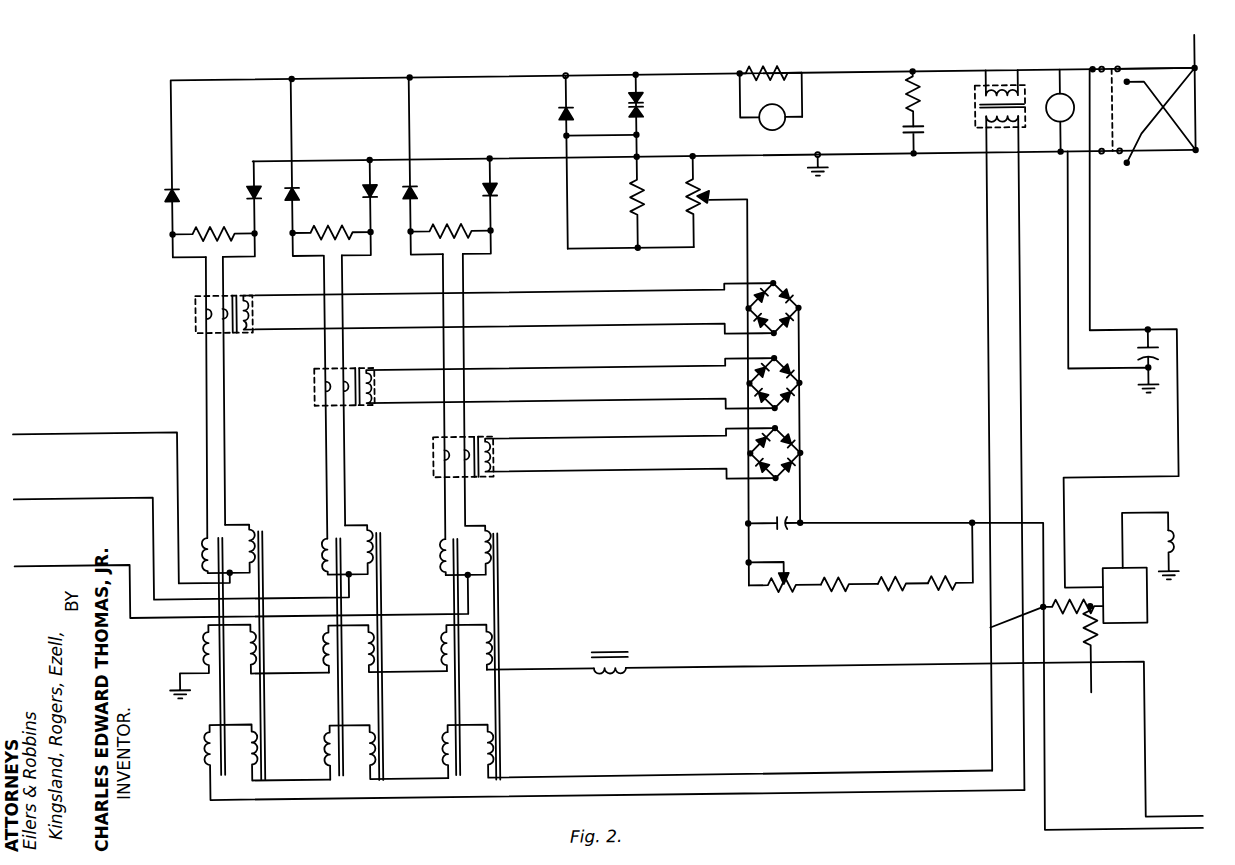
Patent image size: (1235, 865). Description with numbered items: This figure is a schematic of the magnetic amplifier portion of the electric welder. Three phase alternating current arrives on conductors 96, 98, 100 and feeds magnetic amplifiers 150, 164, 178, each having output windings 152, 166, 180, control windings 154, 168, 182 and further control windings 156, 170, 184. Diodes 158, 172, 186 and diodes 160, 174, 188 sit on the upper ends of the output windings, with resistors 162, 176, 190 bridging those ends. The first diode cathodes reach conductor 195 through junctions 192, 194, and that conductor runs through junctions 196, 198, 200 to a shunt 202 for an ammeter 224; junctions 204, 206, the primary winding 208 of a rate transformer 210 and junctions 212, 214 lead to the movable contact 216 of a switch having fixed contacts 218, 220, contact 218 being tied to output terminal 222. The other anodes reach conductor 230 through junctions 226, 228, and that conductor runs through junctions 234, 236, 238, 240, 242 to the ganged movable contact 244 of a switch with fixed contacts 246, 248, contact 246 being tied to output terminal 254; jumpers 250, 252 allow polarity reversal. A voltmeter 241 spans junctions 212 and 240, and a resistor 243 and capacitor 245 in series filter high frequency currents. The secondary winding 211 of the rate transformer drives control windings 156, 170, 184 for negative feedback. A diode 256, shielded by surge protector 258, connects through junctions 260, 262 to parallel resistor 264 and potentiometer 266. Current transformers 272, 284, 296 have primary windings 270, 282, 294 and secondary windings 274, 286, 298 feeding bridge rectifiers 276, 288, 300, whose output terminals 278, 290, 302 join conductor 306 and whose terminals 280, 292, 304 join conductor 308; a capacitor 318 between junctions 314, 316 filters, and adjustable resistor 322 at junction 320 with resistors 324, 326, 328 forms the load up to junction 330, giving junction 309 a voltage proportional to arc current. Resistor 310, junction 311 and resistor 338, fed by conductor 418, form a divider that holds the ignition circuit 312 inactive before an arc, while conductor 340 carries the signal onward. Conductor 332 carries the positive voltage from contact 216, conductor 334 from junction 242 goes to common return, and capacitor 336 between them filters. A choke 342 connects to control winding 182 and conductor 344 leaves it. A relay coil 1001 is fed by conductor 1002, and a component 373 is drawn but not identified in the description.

The conductor 96 is at (72, 428).
The conductor 98 is at (72, 496).
The conductor 100 is at (78, 552).
The magnetic amplifier 150 is at (215, 710).
The output windings 152 is at (230, 529).
The control windings 154 is at (200, 640).
The control windings 156 is at (200, 760).
The diode 158 is at (168, 196).
The diode 160 is at (248, 188).
The resistor 162 is at (240, 220).
The magnetic amplifier 164 is at (335, 694).
The output windings 166 is at (359, 526).
The control windings 168 is at (370, 640).
The control windings 170 is at (370, 745).
The diode 172 is at (298, 194).
The diode 174 is at (366, 192).
The resistor 176 is at (320, 230).
The magnetic amplifier 178 is at (454, 694).
The output windings 180 is at (468, 526).
The control windings 182 is at (490, 640).
The control windings 184 is at (490, 745).
The diode 186 is at (417, 194).
The diode 188 is at (495, 193).
The resistor 190 is at (434, 229).
The junction 192 is at (296, 75).
The junction 194 is at (414, 75).
The conductor 195 is at (480, 75).
The junction 196 is at (570, 75).
The junction 198 is at (640, 75).
The junction 200 is at (744, 75).
The shunt 202 is at (772, 74).
The junction 204 is at (811, 76).
The junction 206 is at (917, 75).
The primary winding 208 is at (986, 82).
The rate transformer 210 is at (984, 105).
The secondary winding 211 is at (990, 124).
The junction 212 is at (1062, 75).
The junction 214 is at (1096, 75).
The movable contact 216 is at (1100, 72).
The fixed contact 218 is at (1135, 75).
The fixed contact 220 is at (1117, 96).
The output terminal 222 is at (1199, 42).
The meter 224 is at (790, 125).
The junction 226 is at (386, 150).
The junction 228 is at (488, 153).
The conductor 230 is at (540, 146).
The junction 234 is at (641, 156).
The junction 236 is at (696, 156).
The junction 238 is at (915, 160).
The junction 240 is at (1060, 155).
The volt meter 241 is at (1058, 99).
The junction 242 is at (1070, 164).
The resistor 243 is at (910, 98).
The movable contact 244 is at (1106, 162).
The capacitor 245 is at (906, 132).
The fixed contact 246 is at (1134, 154).
The fixed contact 248 is at (1130, 172).
The jumper 250 is at (1142, 92).
The jumper 252 is at (1168, 130).
The output terminal 254 is at (1198, 160).
The diode 256 is at (560, 114).
The surge protector 258 is at (648, 102).
The junction 260 is at (572, 134).
The junction 262 is at (646, 236).
The resistor 264 is at (632, 197).
The potentiometer 266 is at (700, 182).
The primary windings 270 is at (208, 318).
The current transformer 272 is at (239, 296).
The secondary windings 274 is at (248, 332).
The full wave bridge rectifier 276 is at (778, 290).
The output terminal 278 is at (748, 310).
The output terminal 280 is at (801, 309).
The primary windings 282 is at (326, 392).
The current transformer 284 is at (360, 365).
The secondary winding 286 is at (373, 402).
The full wave bridge rectifier 288 is at (792, 380).
The output terminal 290 is at (748, 384).
The output terminal 292 is at (801, 386).
The primary windings 294 is at (444, 462).
The current transformer 296 is at (483, 439).
The secondary winding 298 is at (489, 472).
The full wave bridge rectifier 300 is at (790, 448).
The output terminal 302 is at (748, 455).
The output terminal 304 is at (801, 456).
The conductor 306 is at (750, 238).
The conductor 308 is at (801, 495).
The junction 309 is at (990, 631).
The resistor 310 is at (1086, 616).
The junction 311 is at (1088, 640).
The ignition circuit 312 is at (1136, 600).
The junction 314 is at (746, 525).
The junction 316 is at (794, 528).
The capacitor 318 is at (787, 513).
The junction 320 is at (746, 564).
The adjustable resistor 322 is at (788, 592).
The resistor 324 is at (846, 592).
The resistor 326 is at (900, 582).
The resistor 328 is at (934, 591).
The junction 330 is at (970, 524).
The conductor 332 is at (1093, 266).
The conductor 334 is at (1135, 374).
The capacitor 336 is at (1137, 350).
The resistor 338 is at (1092, 638).
The conductor 340 is at (1096, 832).
The choke 342 is at (613, 672).
The conductor 344 is at (764, 668).
The resistor 373 is at (1088, 607).
The conductor 418 is at (1092, 704).
The relay coil 1001 is at (1172, 554).
The conductor 1002 is at (1121, 525).